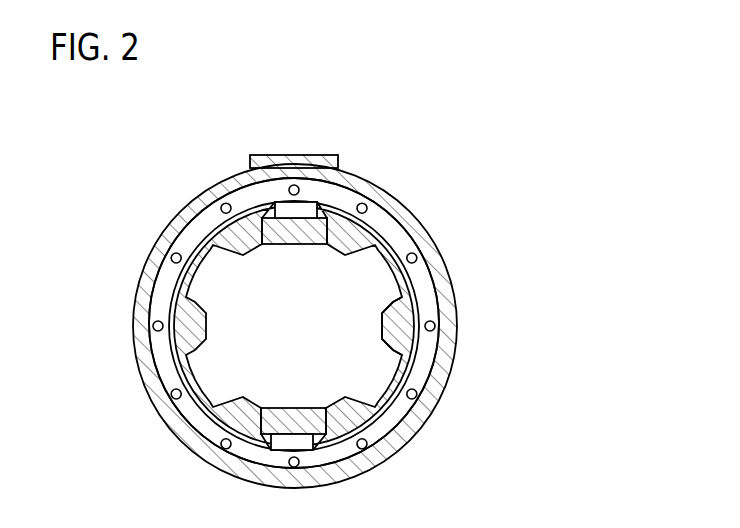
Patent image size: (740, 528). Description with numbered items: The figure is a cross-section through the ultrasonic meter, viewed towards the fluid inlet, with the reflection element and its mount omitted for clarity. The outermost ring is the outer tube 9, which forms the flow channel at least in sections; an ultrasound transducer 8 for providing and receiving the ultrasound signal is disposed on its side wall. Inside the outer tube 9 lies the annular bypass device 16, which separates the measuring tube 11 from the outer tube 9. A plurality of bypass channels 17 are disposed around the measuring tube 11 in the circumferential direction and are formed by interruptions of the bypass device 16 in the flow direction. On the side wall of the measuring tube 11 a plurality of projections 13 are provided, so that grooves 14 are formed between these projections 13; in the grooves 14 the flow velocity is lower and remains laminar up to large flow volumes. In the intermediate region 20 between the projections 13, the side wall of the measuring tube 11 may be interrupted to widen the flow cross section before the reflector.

The ultrasound transducer 8 is at (272, 153).
The outer tube 9 is at (412, 224).
The measuring tube 11 is at (380, 323).
The projections 13 is at (334, 252).
The grooves 14 is at (288, 222).
The bypass device 16 is at (343, 202).
The bypass channels 17 is at (297, 185).
The intermediate region 20 is at (303, 205).